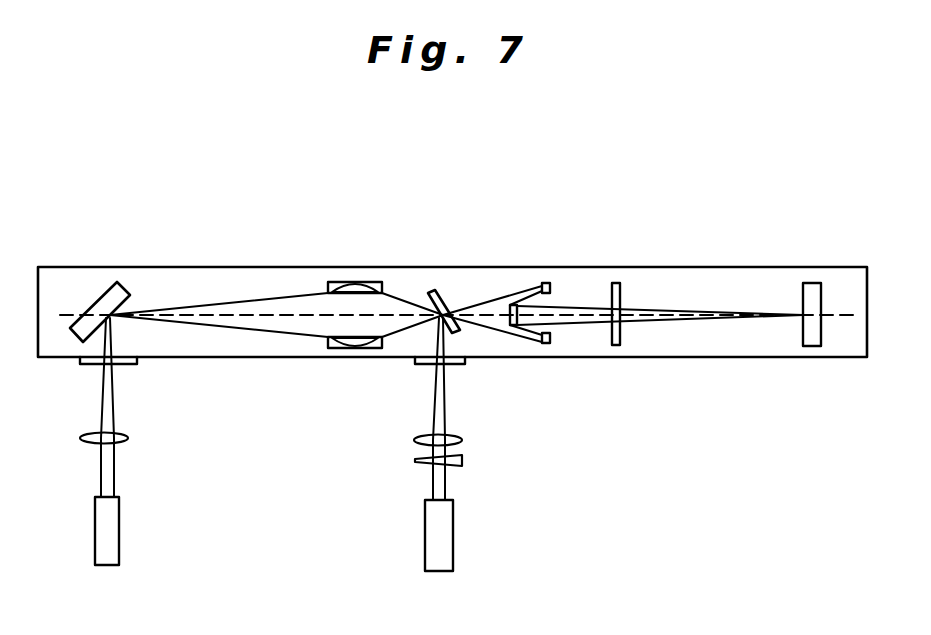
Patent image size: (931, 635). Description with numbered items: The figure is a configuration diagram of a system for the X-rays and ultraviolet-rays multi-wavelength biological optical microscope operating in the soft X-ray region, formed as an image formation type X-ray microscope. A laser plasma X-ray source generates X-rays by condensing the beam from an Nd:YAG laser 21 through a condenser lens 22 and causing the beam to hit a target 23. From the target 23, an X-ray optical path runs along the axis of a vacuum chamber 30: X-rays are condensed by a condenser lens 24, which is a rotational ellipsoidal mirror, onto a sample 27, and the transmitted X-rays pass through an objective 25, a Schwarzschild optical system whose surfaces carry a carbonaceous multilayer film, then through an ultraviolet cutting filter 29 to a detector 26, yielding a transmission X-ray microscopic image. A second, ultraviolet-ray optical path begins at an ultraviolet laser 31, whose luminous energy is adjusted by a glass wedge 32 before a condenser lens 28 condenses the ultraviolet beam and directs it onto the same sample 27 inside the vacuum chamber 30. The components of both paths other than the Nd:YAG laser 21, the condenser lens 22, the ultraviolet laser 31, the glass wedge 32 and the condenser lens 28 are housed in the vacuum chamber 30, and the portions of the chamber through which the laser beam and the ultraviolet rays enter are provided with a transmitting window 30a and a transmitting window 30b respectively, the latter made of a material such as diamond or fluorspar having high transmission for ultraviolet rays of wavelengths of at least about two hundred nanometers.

The Nd:YAG laser 21 is at (122, 528).
The condenser lens 22 is at (132, 435).
The target 23 is at (104, 290).
The condenser lens 24 is at (357, 282).
The objective 25 is at (547, 283).
The detector 26 is at (812, 283).
The sample 27 is at (438, 292).
The condenser lens 28 is at (462, 437).
The ultraviolet cutting filter 29 is at (618, 283).
The vacuum chamber 30 is at (215, 267).
The transmitting window 30a is at (130, 363).
The transmitting window 30b is at (455, 363).
The ultraviolet laser 31 is at (453, 535).
The glass wedge 32 is at (463, 466).